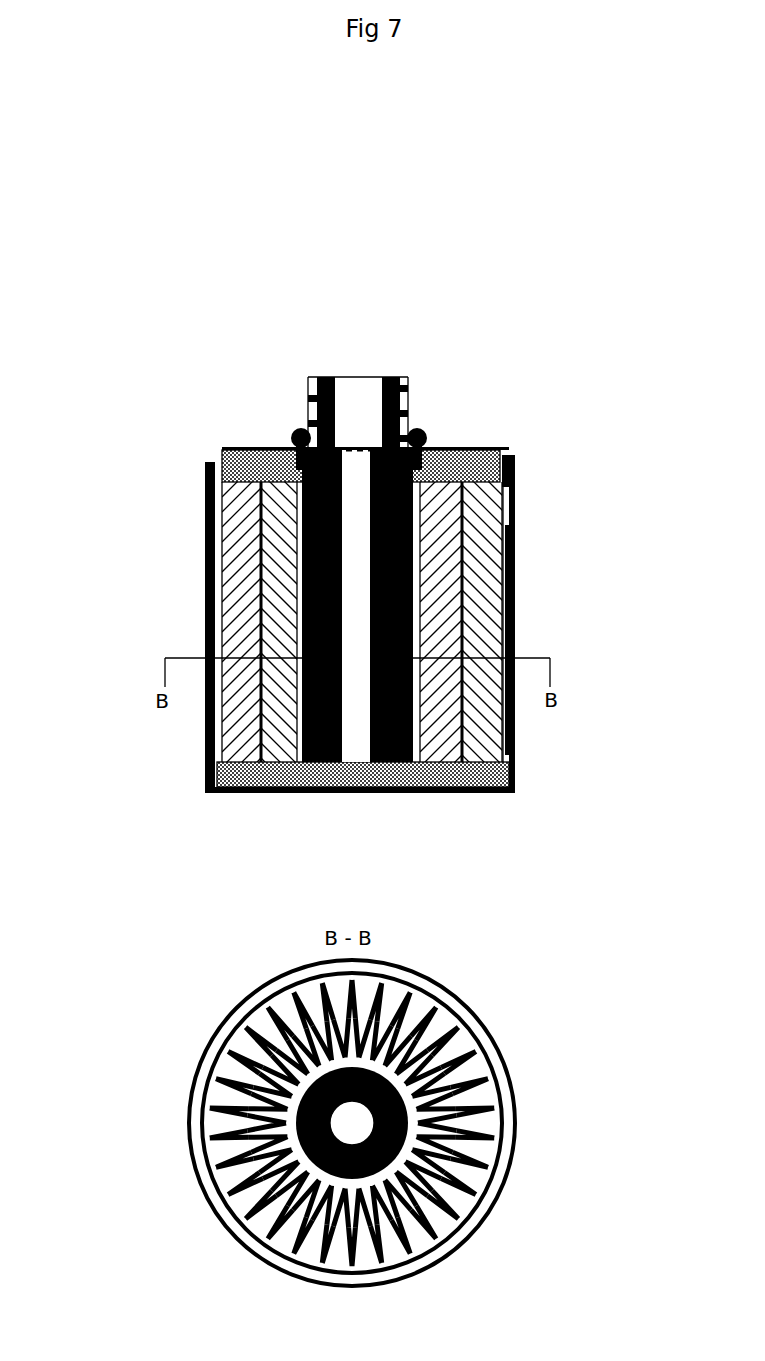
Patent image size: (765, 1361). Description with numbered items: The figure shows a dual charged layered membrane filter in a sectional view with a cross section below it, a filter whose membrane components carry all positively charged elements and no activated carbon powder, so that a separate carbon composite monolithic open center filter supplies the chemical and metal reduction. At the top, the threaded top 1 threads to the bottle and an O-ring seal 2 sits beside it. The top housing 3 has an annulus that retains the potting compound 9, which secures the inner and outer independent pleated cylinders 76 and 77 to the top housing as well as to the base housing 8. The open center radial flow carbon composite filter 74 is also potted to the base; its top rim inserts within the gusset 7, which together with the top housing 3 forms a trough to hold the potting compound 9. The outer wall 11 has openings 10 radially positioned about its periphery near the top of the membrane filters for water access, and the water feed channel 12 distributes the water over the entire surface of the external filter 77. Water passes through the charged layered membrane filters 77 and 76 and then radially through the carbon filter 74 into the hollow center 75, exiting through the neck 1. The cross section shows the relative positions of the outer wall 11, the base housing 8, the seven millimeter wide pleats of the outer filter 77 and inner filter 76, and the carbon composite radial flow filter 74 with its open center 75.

The threaded top 1 is at (292, 385).
The O-ring seal 2 is at (292, 436).
The top housing 3 is at (270, 455).
The gusset 7 is at (424, 435).
The base housing 8 is at (512, 787).
The potting compound 9 is at (505, 447).
The openings 10 is at (509, 509).
The outer wall 11 is at (515, 563).
The water feed channel 12 is at (503, 594).
The open center radial flow carbon composite filter 74 is at (403, 720).
The central bore 75 is at (355, 612).
The inner pleated charged layered membrane filter 76 is at (282, 638).
The outer pleated charged layered membrane filter 77 is at (248, 572).